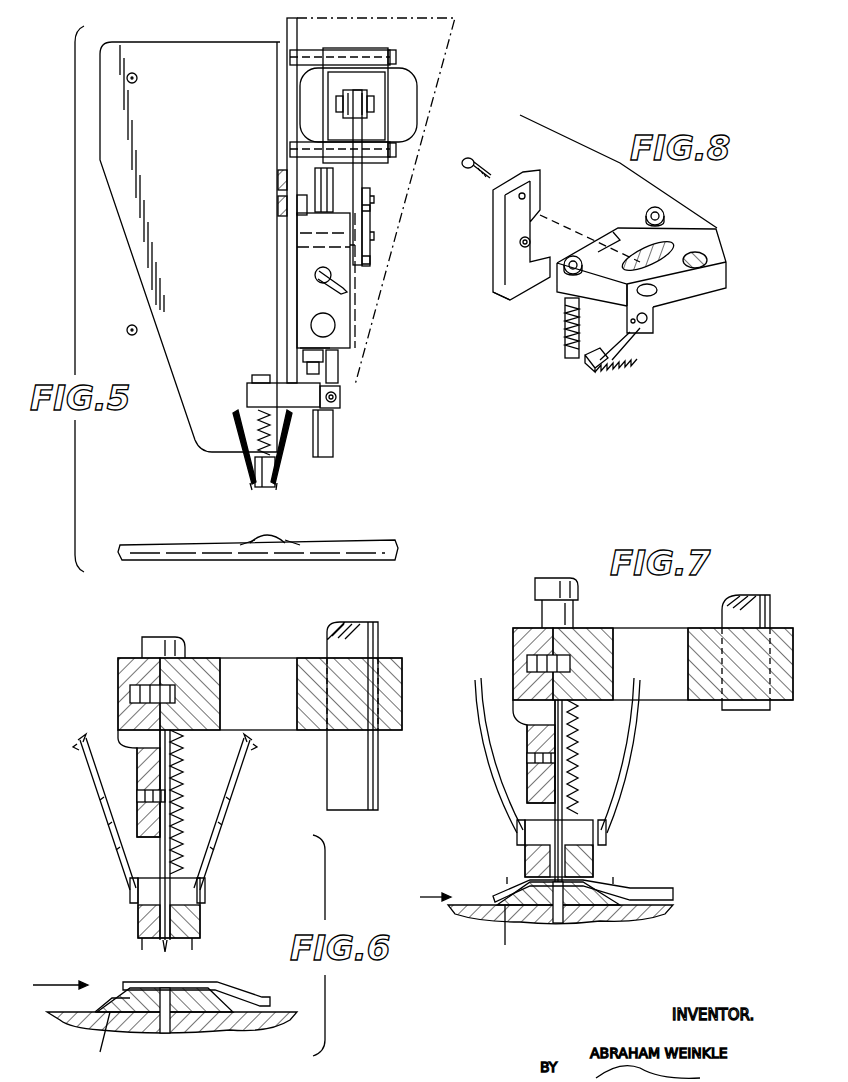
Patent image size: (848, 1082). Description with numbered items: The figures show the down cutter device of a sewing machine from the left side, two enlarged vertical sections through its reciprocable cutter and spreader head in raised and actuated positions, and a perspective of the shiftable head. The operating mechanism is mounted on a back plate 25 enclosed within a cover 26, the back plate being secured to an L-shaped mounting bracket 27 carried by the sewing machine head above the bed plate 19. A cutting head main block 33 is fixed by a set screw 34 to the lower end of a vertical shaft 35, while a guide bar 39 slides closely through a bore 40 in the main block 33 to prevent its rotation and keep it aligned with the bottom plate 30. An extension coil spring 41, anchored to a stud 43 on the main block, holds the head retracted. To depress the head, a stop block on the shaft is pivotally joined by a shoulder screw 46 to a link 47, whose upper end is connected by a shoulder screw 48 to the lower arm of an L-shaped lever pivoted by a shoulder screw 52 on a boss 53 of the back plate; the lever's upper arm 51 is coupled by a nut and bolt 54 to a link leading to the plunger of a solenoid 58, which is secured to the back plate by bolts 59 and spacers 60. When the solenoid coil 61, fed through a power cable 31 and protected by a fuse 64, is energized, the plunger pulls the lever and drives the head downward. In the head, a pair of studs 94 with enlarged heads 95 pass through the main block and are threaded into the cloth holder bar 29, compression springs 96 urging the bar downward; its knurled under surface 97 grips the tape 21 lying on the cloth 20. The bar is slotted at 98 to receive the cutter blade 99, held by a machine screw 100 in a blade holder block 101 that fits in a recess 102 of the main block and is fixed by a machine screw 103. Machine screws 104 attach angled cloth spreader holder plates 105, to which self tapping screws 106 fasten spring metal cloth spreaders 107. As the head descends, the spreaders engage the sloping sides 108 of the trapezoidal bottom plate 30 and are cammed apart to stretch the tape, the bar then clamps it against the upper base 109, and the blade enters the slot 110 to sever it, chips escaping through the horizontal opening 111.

In FIG. 5, the sewing machine bed plate 19 is at (160, 545).
In FIG. 6, the sewing machine bed plate 19 is at (275, 1026).
In FIG. 7, the sewing machine bed plate 19 is at (483, 925).
In FIG. 6, the flat cloth 20 is at (220, 984).
In FIG. 7, the flat cloth 20 is at (666, 896).
In FIG. 6, the tape 21 is at (122, 982).
In FIG. 7, the tape 21 is at (470, 888).
In FIG. 5, the back plate 25 is at (287, 26).
In FIG. 5, the cover 26 is at (455, 40).
In FIG. 5, the L-shaped mounting bracket 27 is at (124, 248).
In FIG. 5, the cloth holder bar 29 is at (278, 480).
In FIG. 8, the cloth holder bar 29 is at (585, 363).
In FIG. 6, the cloth holder bar 29 is at (148, 905).
In FIG. 7, the cloth holder bar 29 is at (576, 880).
In FIG. 5, the bottom plate 30 is at (280, 541).
In FIG. 6, the bottom plate 30 is at (200, 1000).
In FIG. 7, the bottom plate 30 is at (590, 905).
In FIG. 5, the power cable 31 is at (346, 290).
In FIG. 5, the cutting head main block 33 is at (247, 393).
In FIG. 8, the cutting head main block 33 is at (705, 285).
In FIG. 6, the cutting head main block 33 is at (246, 694).
In FIG. 7, the cutting head main block 33 is at (638, 670).
In FIG. 8, the set screw 34 is at (655, 322).
In FIG. 5, the shaft 35 is at (318, 181).
In FIG. 5, the guide bar 39 is at (333, 437).
In FIG. 6, the guide bar 39 is at (378, 770).
In FIG. 7, the guide bar 39 is at (725, 616).
In FIG. 8, the bore 40 is at (700, 258).
In FIG. 5, the extension coil spring 41 is at (338, 356).
In FIG. 5, the stud 43 is at (340, 397).
In FIG. 5, the shoulder screw 46 is at (366, 260).
In FIG. 5, the link 47 is at (352, 200).
In FIG. 5, the shoulder screw 48 is at (374, 200).
In FIG. 5, the upper arm 51 is at (362, 176).
In FIG. 5, the shoulder screw 52 is at (373, 236).
In FIG. 5, the boss 53 is at (305, 237).
In FIG. 5, the nut and bolt 54 is at (370, 104).
In FIG. 5, the solenoid 58 is at (378, 50).
In FIG. 5, the bolts 59 is at (396, 57).
In FIG. 5, the spacers 60 is at (300, 142).
In FIG. 5, the solenoid coil 61 is at (405, 88).
In FIG. 5, the fuse 64 is at (336, 325).
In FIG. 8, the studs 94 is at (565, 312).
In FIG. 7, the studs 94 is at (545, 616).
In FIG. 5, the enlarged head 95 is at (262, 375).
In FIG. 8, the enlarged head 95 is at (652, 208).
In FIG. 6, the enlarged head 95 is at (145, 642).
In FIG. 7, the enlarged head 95 is at (540, 586).
In FIG. 8, the compression springs 96 is at (568, 336).
In FIG. 6, the compression springs 96 is at (178, 768).
In FIG. 7, the compression springs 96 is at (576, 745).
In FIG. 6, the under surface 97 is at (163, 951).
In FIG. 6, the slot 98 is at (172, 912).
In FIG. 7, the slot 98 is at (547, 878).
In FIG. 8, the cutter blade 99 is at (505, 290).
In FIG. 6, the cutter blade 99 is at (160, 943).
In FIG. 8, the machine screw 100 is at (520, 243).
In FIG. 6, the machine screw 100 is at (140, 796).
In FIG. 7, the machine screw 100 is at (541, 758).
In FIG. 8, the blade holder block 101 is at (495, 205).
In FIG. 6, the blade holder block 101 is at (138, 762).
In FIG. 7, the blade holder block 101 is at (534, 751).
In FIG. 8, the recess 102 is at (608, 247).
In FIG. 8, the machine screw 103 is at (478, 168).
In FIG. 6, the machine screw 103 is at (127, 698).
In FIG. 7, the machine screw 103 is at (548, 663).
In FIG. 6, the machine screws 104 is at (133, 889).
In FIG. 7, the machine screws 104 is at (520, 840).
In FIG. 6, the cloth spreader holder plates 105 is at (205, 845).
In FIG. 7, the cloth spreader holder plates 105 is at (495, 746).
In FIG. 6, the self tapping screws 106 is at (78, 745).
In FIG. 5, the cloth spreaders 107 is at (250, 487).
In FIG. 8, the cloth spreaders 107 is at (626, 350).
In FIG. 6, the cloth spreaders 107 is at (142, 946).
In FIG. 7, the cloth spreaders 107 is at (505, 882).
In FIG. 5, the sloping sides 108 is at (250, 540).
In FIG. 6, the sloping sides 108 is at (110, 998).
In FIG. 5, the upper base 109 is at (265, 530).
In FIG. 6, the slot 110 is at (162, 1012).
In FIG. 7, the slot 110 is at (553, 905).
In FIG. 6, the horizontal opening 111 is at (100, 1040).
In FIG. 7, the horizontal opening 111 is at (506, 935).